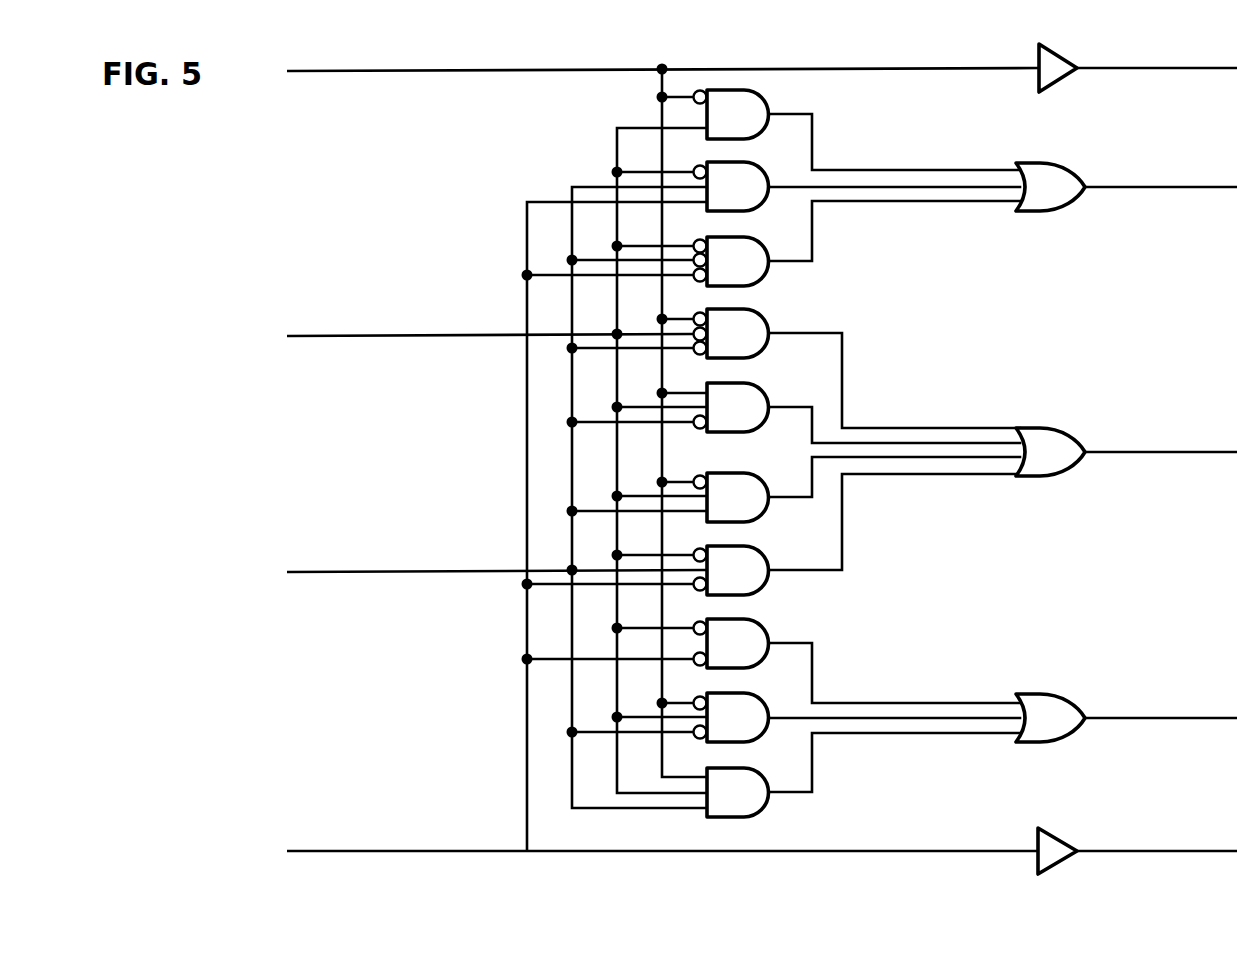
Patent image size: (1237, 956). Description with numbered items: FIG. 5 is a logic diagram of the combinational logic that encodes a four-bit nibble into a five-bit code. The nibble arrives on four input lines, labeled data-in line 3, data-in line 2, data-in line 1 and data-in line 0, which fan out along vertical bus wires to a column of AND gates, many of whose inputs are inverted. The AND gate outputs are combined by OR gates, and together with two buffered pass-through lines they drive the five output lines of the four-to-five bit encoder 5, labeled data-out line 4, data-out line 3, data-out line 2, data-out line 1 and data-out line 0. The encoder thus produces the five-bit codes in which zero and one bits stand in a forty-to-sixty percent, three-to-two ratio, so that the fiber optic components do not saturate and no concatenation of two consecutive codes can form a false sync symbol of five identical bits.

The DATAIN 0 input line 0 is at (662, 527).
The DATAIN 1 input line 1 is at (497, 559).
The DATAIN 2 input line 2 is at (490, 324).
The DATAIN 3 input line 3 is at (663, 59).
The DATAOUT 4 output buffer 4 is at (1138, 64).
The 4 to 5 bit encoder logic 5 is at (797, 53).